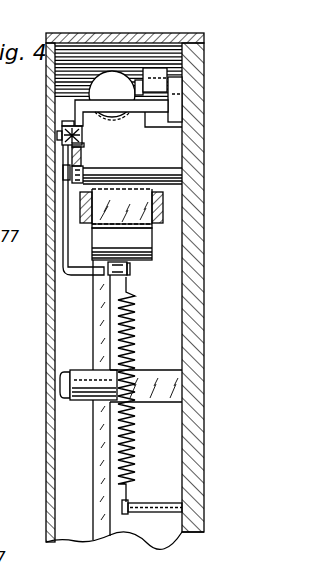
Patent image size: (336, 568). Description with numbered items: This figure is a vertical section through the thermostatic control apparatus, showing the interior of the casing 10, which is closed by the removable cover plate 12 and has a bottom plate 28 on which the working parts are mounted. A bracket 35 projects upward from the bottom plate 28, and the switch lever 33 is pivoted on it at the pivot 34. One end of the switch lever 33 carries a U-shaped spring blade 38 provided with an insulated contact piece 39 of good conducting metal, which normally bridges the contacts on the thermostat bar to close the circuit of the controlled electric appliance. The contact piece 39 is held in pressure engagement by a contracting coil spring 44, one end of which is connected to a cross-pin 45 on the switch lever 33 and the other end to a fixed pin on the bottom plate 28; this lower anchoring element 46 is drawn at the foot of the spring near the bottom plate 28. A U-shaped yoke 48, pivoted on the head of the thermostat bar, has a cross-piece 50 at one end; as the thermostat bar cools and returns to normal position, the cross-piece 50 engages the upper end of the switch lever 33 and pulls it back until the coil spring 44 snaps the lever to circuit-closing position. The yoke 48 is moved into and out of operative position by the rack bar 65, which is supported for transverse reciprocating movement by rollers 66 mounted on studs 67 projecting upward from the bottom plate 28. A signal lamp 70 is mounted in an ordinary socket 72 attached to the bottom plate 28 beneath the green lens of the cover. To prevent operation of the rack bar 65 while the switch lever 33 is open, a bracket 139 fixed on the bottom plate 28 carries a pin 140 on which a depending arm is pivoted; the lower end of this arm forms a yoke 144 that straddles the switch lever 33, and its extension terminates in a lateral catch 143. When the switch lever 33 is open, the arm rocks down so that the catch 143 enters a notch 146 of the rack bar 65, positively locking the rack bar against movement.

The casing 10 is at (160, 34).
The cover plate 12 is at (50, 463).
The bottom plate 28 is at (200, 425).
The switch lever 33 is at (93, 422).
The pivot 34 is at (68, 371).
The bracket 35 is at (155, 377).
The spring blade 38 is at (143, 237).
The contact piece 39 is at (97, 207).
The coil spring 44 is at (135, 424).
The cross-pin 45 is at (130, 270).
The bolt 46 is at (143, 500).
The yoke 48 is at (165, 203).
The cross-piece 50 is at (157, 228).
The rack bar 65 is at (81, 163).
The rollers 66 is at (86, 174).
The studs 67 is at (164, 168).
The signal lamp 70 is at (110, 78).
The socket 72 is at (155, 97).
The bracket 139 is at (87, 102).
The pin 140 is at (57, 136).
The catch 143 is at (65, 124).
The yoke 144 is at (73, 277).
The notch 146 is at (84, 145).